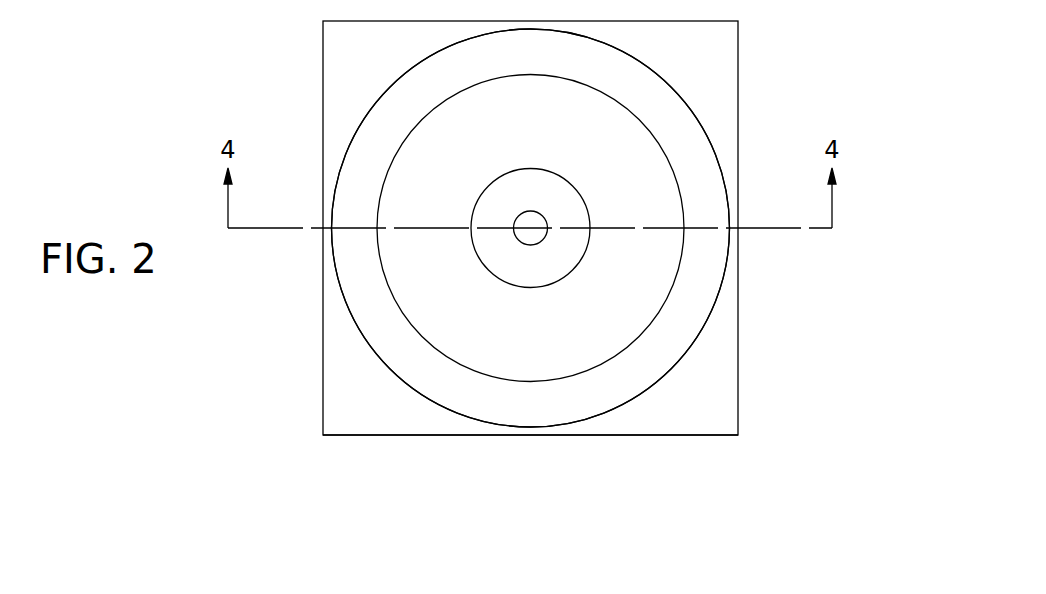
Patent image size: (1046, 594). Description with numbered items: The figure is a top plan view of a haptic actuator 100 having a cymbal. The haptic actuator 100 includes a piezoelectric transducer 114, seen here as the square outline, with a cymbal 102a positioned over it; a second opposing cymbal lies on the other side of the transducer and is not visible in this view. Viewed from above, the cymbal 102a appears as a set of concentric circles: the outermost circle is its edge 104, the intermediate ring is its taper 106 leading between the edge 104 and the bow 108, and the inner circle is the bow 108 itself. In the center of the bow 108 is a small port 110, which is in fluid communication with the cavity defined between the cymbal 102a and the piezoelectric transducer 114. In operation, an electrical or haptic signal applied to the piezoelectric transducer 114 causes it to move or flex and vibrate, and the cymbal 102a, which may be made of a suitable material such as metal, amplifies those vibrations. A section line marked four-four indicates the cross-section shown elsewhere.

The haptic actuator 100 is at (738, 88).
The cymbal 102a is at (700, 338).
The edge 104 is at (387, 368).
The taper 106 is at (407, 322).
The bow 108 is at (477, 258).
The port 110 is at (523, 245).
The piezoelectric transducer 114 is at (703, 437).